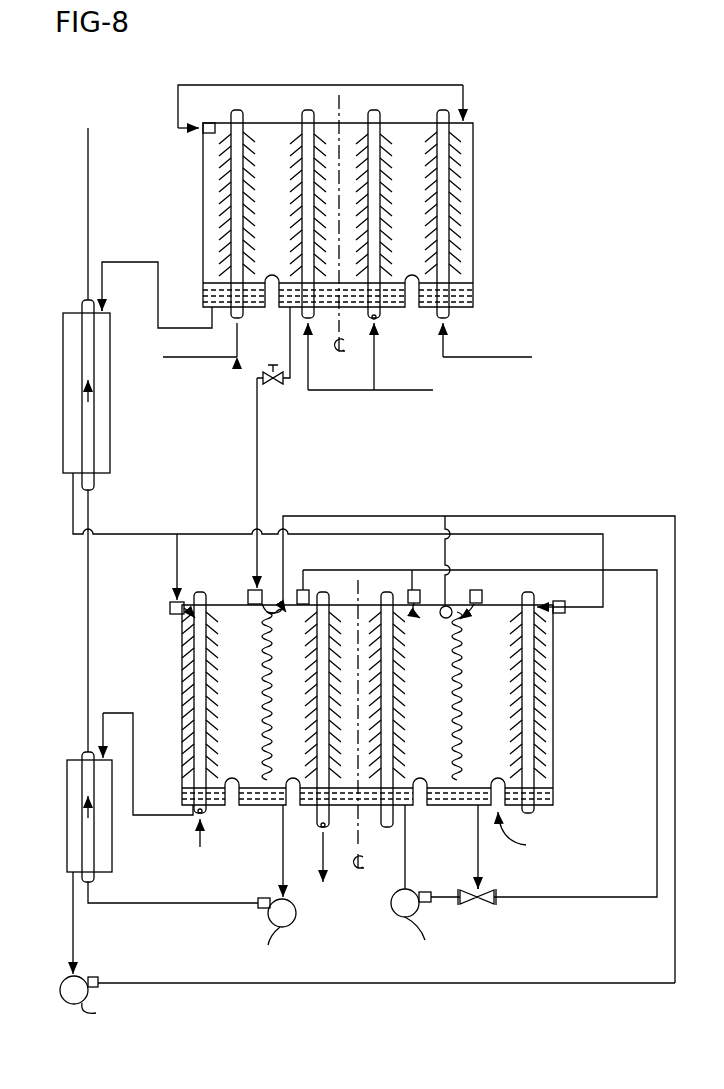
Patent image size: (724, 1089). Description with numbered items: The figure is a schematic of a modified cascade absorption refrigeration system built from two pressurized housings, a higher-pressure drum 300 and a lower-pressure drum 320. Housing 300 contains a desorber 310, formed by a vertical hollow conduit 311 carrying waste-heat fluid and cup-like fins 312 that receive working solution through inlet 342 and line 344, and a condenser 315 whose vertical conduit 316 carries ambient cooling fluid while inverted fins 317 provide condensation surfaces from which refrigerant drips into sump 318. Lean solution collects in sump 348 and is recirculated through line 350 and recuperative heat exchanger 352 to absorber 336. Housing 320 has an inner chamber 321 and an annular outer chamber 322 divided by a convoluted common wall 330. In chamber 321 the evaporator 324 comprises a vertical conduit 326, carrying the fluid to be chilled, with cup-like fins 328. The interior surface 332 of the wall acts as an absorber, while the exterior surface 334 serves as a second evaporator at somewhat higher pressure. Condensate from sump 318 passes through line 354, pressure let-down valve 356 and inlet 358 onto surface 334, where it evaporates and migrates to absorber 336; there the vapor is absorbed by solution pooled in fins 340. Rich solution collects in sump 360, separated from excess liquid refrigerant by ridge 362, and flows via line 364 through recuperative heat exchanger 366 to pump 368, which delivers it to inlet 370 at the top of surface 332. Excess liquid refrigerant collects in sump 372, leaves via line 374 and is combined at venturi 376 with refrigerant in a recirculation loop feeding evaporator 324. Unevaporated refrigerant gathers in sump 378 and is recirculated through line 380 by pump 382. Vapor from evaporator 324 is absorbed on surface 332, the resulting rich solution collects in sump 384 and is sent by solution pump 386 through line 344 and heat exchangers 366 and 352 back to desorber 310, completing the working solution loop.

The pressurized housing 300 is at (201, 224).
The desorber 310 is at (246, 216).
The hollow conduit 311 is at (232, 268).
The cup-like fins 312 is at (225, 180).
The condenser 315 is at (392, 150).
The hollow conduit 316 is at (379, 113).
The cup-like fins 317 is at (385, 213).
The sump 318 is at (378, 322).
The pressurized housing 320 is at (562, 704).
The inner chamber 321 is at (446, 720).
The annular outer chamber 322 is at (507, 686).
The evaporator 324 is at (302, 693).
The hollow conduit 326 is at (320, 825).
The cup-like fins 328 is at (408, 640).
The common wall 330 is at (283, 530).
The interior surface 332 is at (268, 618).
The exterior surface 334 is at (262, 698).
The absorber 336 is at (218, 745).
The cup-like fins 340 is at (172, 614).
The inlet 342 is at (200, 133).
The line 344 is at (86, 236).
The sump 348 is at (205, 296).
The line 350 is at (145, 264).
The recuperative heat exchanger 352 is at (111, 460).
The line 354 is at (258, 457).
The pressure let-down valve 356 is at (272, 387).
The inlet 358 is at (250, 590).
The sump 360 is at (184, 797).
The ridge 362 is at (232, 805).
The line 364 is at (175, 818).
The recuperative heat exchanger 366 is at (67, 832).
The pump 368 is at (62, 985).
The inlet 370 is at (297, 590).
The sump 372 is at (470, 806).
The line 374 is at (434, 847).
The venturi 376 is at (490, 905).
The sump 378 is at (385, 828).
The line 380 is at (656, 755).
The pump 382 is at (398, 915).
The sump 384 is at (282, 822).
The solution pump 386 is at (270, 915).